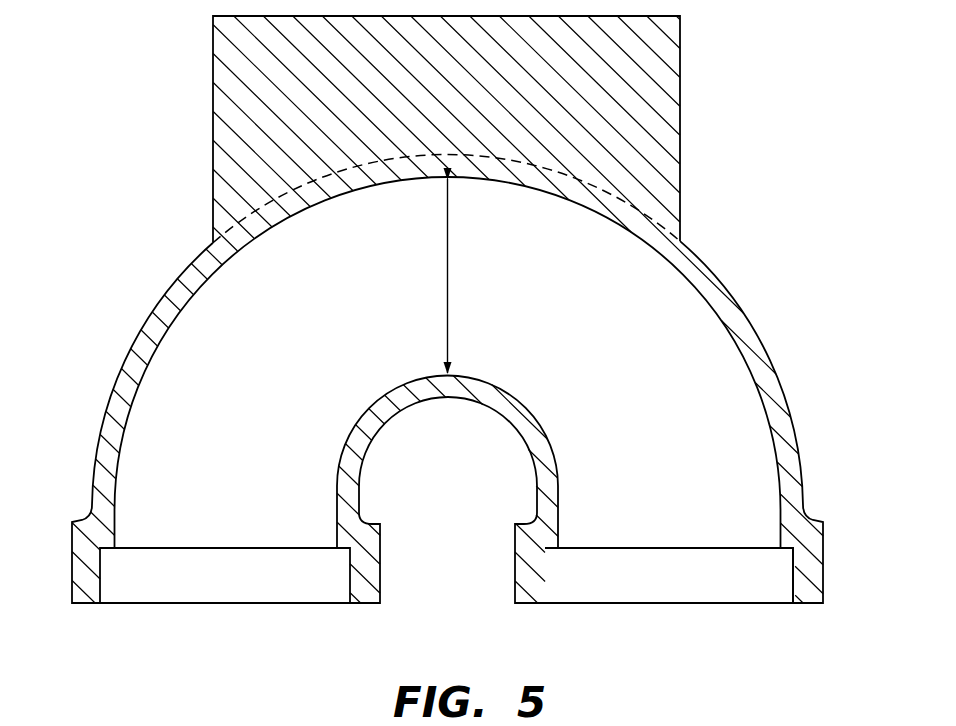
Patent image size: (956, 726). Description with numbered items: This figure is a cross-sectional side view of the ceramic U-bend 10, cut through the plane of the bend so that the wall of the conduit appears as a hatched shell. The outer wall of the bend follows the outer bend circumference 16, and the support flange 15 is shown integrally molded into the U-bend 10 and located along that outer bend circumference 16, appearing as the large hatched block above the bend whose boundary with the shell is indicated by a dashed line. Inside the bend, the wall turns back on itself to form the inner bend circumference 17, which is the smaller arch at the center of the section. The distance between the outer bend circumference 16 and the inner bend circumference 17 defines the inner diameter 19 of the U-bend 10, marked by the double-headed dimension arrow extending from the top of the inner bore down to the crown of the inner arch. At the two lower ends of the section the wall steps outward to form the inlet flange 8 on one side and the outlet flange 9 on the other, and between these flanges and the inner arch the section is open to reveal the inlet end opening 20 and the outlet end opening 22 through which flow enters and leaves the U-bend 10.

The U-bend 10 is at (792, 260).
The support flange 15 is at (237, 117).
The outer bend circumference 16 is at (182, 273).
The inner bend circumference 17 is at (402, 408).
The inner diameter 19 is at (448, 286).
The inlet flange 8 is at (82, 573).
The outlet flange 9 is at (813, 573).
The inlet end opening 20 is at (220, 582).
The outlet end opening 22 is at (680, 582).